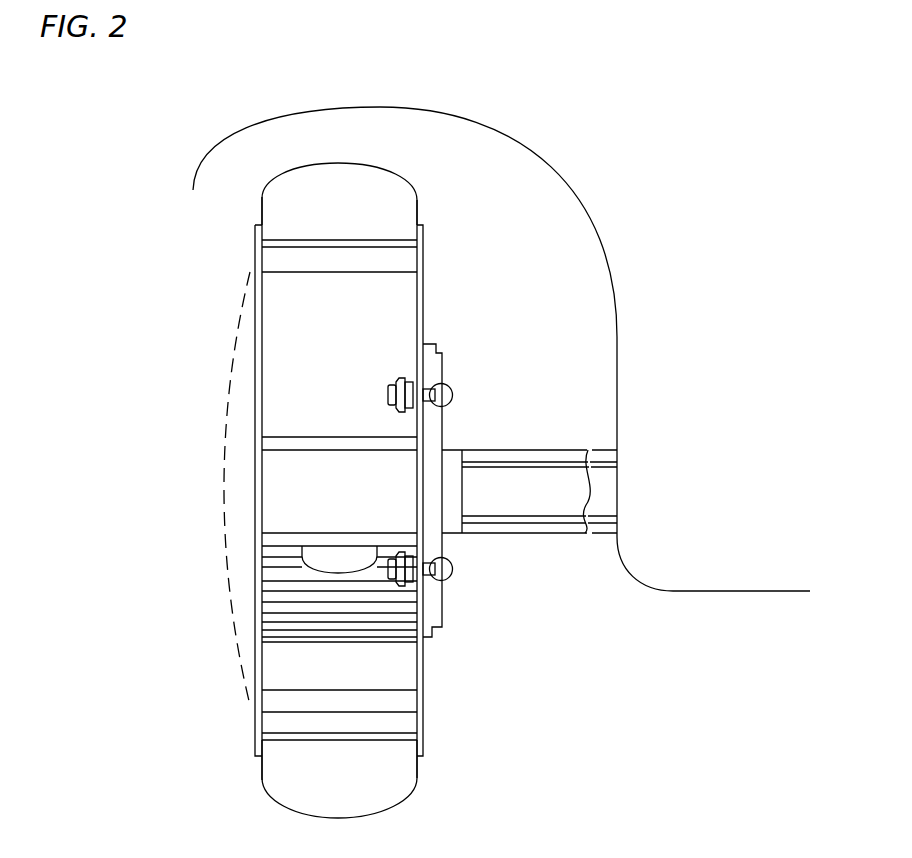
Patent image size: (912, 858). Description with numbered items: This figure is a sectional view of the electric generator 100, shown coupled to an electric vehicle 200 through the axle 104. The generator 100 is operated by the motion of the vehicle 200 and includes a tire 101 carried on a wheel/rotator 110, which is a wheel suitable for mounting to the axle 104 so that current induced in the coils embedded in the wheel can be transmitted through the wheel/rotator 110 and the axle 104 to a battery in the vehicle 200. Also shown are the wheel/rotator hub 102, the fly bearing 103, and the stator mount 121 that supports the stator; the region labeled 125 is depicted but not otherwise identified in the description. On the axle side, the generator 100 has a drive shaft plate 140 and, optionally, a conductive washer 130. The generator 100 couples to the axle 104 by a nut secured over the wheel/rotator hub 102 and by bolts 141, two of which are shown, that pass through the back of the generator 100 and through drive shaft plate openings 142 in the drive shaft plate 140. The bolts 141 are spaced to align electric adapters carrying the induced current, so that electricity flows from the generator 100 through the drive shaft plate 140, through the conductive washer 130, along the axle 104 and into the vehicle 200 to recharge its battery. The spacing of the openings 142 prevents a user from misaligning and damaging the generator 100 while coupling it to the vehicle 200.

The electric generator 100 is at (216, 103).
The tire 101 is at (397, 180).
The wheel/rotator 110 is at (355, 257).
The fly bearing 103 is at (357, 443).
The wheel/rotator hub 102 is at (272, 464).
The slats 125 is at (272, 599).
The stator mount 121 is at (337, 565).
The drive shaft plate 140 is at (443, 623).
The bolts 141 is at (448, 393).
The drive shaft plate openings 142 is at (432, 403).
The conductive washer 130 is at (495, 531).
The axle 104 is at (533, 473).
The vehicle 200 is at (716, 563).